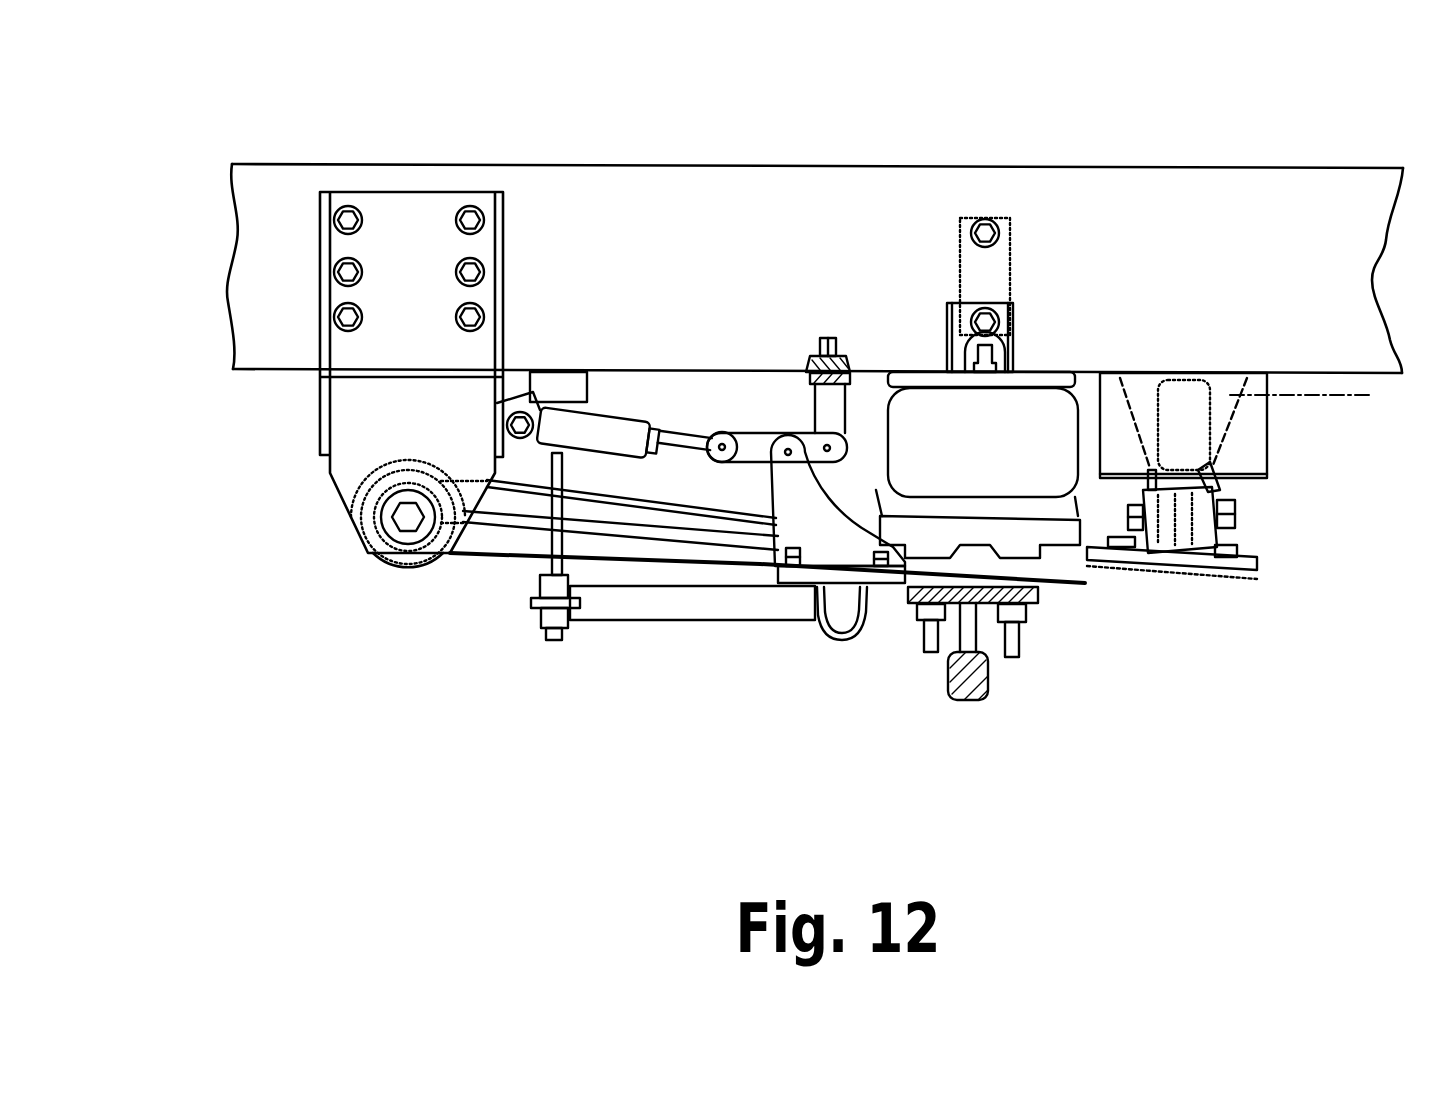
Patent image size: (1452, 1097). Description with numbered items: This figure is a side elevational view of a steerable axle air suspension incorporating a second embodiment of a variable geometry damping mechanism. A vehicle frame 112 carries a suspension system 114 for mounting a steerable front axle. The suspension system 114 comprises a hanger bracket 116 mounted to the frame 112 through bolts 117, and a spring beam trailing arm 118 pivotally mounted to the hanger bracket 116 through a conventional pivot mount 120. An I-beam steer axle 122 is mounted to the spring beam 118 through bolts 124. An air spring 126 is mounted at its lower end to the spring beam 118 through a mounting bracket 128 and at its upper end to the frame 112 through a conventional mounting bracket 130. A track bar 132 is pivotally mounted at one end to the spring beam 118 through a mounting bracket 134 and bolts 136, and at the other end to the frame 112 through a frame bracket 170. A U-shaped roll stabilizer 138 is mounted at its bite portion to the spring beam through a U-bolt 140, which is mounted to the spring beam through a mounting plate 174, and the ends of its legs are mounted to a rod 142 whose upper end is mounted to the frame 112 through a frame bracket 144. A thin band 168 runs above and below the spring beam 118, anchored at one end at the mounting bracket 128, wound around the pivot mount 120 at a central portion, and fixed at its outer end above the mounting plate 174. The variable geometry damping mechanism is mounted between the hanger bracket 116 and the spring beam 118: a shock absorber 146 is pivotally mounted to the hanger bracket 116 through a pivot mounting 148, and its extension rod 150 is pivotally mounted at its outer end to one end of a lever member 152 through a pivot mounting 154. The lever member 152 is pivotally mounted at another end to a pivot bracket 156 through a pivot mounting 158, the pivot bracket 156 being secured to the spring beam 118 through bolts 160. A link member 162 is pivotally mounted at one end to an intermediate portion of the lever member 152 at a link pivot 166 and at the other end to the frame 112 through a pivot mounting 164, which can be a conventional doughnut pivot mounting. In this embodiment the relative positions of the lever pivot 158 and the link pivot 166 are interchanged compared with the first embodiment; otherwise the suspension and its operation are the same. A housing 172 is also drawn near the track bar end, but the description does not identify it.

The vehicle frame 112 is at (1322, 203).
The suspension system 114 is at (515, 625).
The hanger bracket 116 is at (360, 425).
The bolts 117 is at (474, 268).
The spring beam trailing arm 118 is at (660, 507).
The pivot mount 120 is at (403, 519).
The I-beam steer axle 122 is at (957, 597).
The bolts 124 is at (1017, 630).
The air spring 126 is at (1037, 425).
The mounting bracket 128 is at (1012, 547).
The mounting bracket 130 is at (1017, 382).
The track bar 132 is at (1190, 438).
The mounting bracket 134 is at (1195, 548).
The bolts 136 is at (1237, 547).
The U-shaped roll stabilizer 138 is at (612, 598).
The U-bolt 140 is at (837, 637).
The rod 142 is at (548, 470).
The frame bracket 144 is at (556, 384).
The shock absorber 146 is at (597, 418).
The pivot mounting 148 is at (521, 412).
The extension rod 150 is at (666, 422).
The lever member 152 is at (753, 460).
The pivot mounting 154 is at (721, 433).
The pivot bracket 156 is at (778, 508).
The pivot mounting 158 is at (791, 496).
The bolts 160 is at (820, 620).
The link member 162 is at (833, 412).
The pivot mounting 164 is at (808, 350).
The link pivot 166 is at (845, 428).
The thin band 168 is at (606, 494).
The frame bracket 170 is at (1328, 397).
The bumper housing 172 is at (1250, 427).
The mounting plate 174 is at (903, 580).